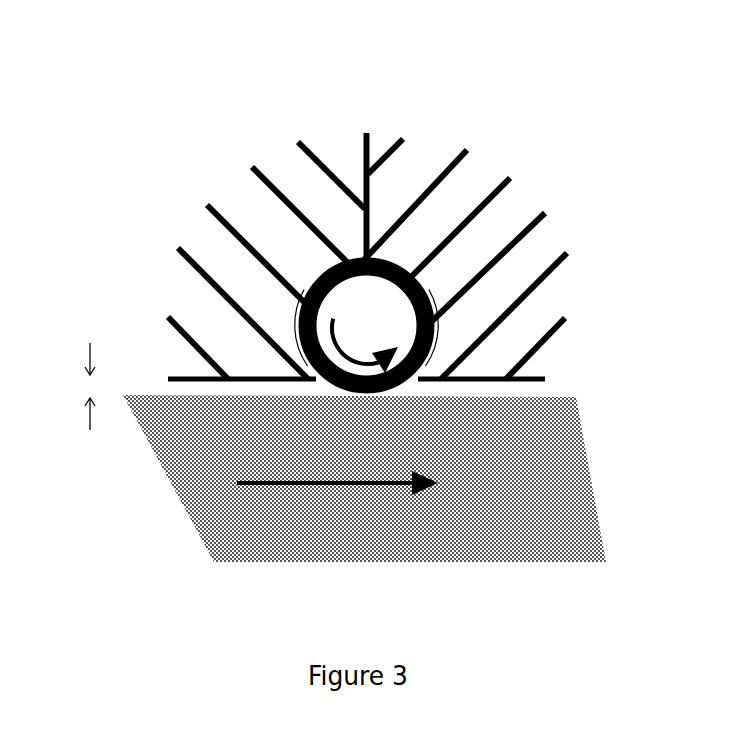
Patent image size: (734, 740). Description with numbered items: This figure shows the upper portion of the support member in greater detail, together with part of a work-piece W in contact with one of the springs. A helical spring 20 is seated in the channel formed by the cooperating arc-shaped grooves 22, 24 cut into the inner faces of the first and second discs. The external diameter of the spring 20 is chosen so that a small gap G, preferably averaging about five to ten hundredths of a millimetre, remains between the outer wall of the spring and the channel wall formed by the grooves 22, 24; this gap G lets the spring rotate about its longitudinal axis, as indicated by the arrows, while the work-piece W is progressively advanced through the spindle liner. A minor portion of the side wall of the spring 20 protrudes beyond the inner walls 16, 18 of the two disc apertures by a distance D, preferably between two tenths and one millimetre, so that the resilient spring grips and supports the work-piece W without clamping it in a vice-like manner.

The inner wall of first disc aperture 16 is at (262, 378).
The inner wall of second disc aperture 18 is at (495, 383).
The helical spring 20 is at (358, 256).
The arc-shaped groove 22 is at (295, 312).
The arc-shaped groove 24 is at (428, 290).
The gap G is at (433, 367).
The protrusion distance D is at (72, 386).
The work-piece W is at (337, 499).